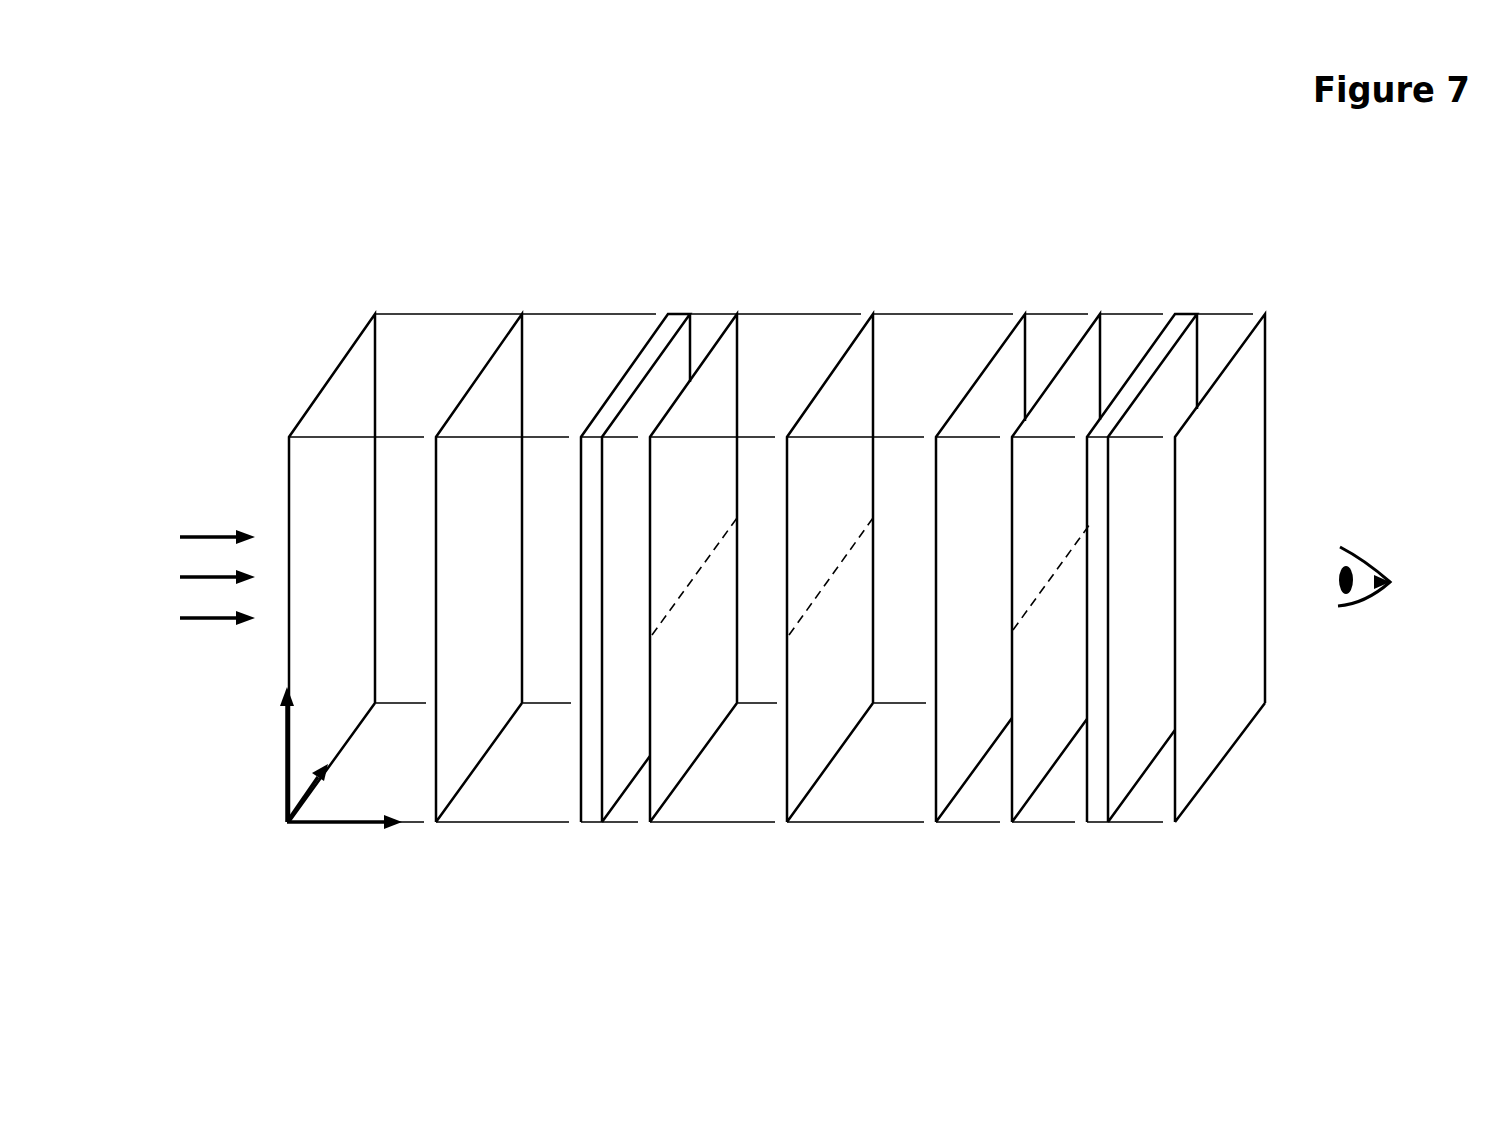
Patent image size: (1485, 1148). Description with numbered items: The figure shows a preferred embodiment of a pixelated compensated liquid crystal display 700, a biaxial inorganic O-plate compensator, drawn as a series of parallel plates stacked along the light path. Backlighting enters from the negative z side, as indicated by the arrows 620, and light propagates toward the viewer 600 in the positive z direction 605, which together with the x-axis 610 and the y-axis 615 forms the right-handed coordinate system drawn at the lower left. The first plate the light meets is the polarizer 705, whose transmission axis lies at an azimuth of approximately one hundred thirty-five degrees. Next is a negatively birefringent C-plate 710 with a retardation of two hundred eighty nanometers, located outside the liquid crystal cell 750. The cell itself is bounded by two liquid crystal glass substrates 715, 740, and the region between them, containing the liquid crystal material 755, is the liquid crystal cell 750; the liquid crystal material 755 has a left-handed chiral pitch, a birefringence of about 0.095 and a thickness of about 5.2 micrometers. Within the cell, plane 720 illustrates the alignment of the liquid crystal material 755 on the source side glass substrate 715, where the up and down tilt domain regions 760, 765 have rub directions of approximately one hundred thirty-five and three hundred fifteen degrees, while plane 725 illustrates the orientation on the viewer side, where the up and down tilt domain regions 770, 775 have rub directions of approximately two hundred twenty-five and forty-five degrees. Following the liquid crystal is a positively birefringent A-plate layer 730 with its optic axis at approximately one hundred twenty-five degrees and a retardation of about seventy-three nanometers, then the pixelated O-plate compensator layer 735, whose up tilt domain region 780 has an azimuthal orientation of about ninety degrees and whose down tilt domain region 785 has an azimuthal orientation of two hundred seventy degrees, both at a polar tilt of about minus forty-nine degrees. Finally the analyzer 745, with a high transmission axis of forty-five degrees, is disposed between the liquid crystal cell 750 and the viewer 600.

The viewer 600 is at (1375, 576).
The positive z direction 605 is at (335, 824).
The x-axis 610 is at (313, 797).
The y-axis 615 is at (283, 742).
The arrows 620 is at (213, 537).
The pixelated compensated liquid crystal display 700 is at (392, 192).
The polarizer 705 is at (367, 343).
The negatively birefringent C-plate 710 is at (512, 343).
The liquid crystal glass substrate 715 is at (682, 343).
The plane 720 is at (728, 346).
The plane 725 is at (862, 346).
The positively birefringent A-plate layer 730 is at (1013, 347).
The pixelated O-plate compensator layer 735 is at (1092, 347).
The liquid crystal glass substrate 740 is at (1183, 348).
The analyzer 745 is at (1252, 348).
The liquid crystal cell 750 is at (577, 835).
The liquid crystal material 755 is at (600, 835).
The up tilt domain region 760 is at (696, 501).
The down tilt domain region 765 is at (694, 684).
The up tilt domain region 770 is at (833, 501).
The down tilt domain region 775 is at (831, 684).
The up tilt domain region of O-plate 780 is at (1056, 502).
The down tilt domain region of O-plate 785 is at (1054, 653).